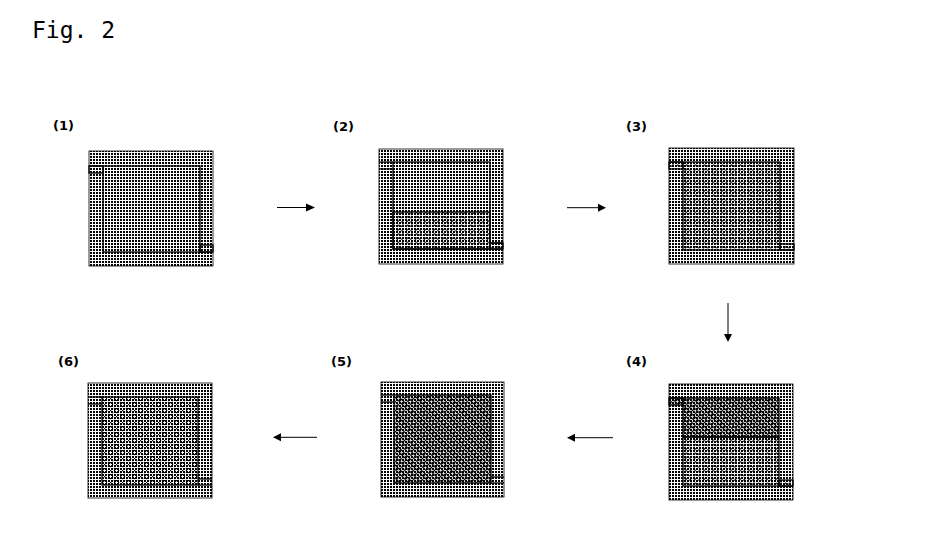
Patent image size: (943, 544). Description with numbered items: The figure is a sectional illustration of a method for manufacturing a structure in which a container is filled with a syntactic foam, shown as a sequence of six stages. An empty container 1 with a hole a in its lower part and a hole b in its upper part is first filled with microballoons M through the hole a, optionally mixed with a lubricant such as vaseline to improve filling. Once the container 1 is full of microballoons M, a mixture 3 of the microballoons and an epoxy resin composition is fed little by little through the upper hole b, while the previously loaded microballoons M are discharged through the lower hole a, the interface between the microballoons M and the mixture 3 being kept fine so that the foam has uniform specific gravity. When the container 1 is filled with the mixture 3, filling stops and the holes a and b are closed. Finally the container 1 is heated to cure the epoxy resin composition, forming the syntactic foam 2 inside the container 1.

The container 1 is at (194, 139).
The hole a is at (210, 247).
The hole b is at (89, 169).
The microballoons M is at (395, 228).
The syntactic foam 2 is at (202, 446).
The mixture 3 is at (669, 402).